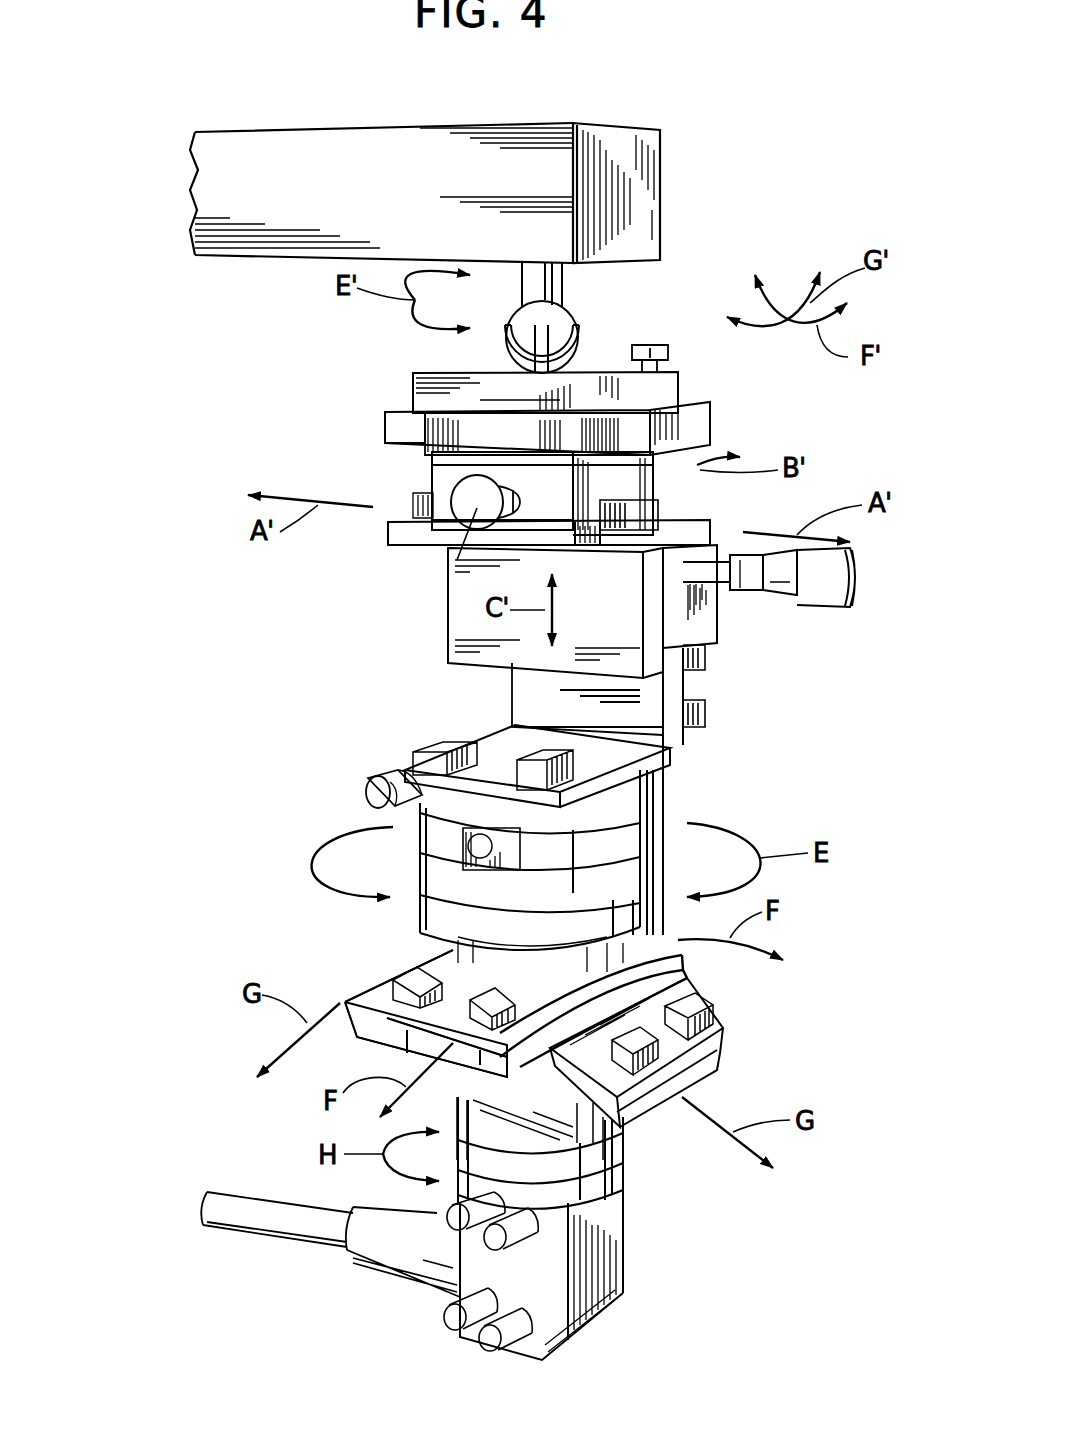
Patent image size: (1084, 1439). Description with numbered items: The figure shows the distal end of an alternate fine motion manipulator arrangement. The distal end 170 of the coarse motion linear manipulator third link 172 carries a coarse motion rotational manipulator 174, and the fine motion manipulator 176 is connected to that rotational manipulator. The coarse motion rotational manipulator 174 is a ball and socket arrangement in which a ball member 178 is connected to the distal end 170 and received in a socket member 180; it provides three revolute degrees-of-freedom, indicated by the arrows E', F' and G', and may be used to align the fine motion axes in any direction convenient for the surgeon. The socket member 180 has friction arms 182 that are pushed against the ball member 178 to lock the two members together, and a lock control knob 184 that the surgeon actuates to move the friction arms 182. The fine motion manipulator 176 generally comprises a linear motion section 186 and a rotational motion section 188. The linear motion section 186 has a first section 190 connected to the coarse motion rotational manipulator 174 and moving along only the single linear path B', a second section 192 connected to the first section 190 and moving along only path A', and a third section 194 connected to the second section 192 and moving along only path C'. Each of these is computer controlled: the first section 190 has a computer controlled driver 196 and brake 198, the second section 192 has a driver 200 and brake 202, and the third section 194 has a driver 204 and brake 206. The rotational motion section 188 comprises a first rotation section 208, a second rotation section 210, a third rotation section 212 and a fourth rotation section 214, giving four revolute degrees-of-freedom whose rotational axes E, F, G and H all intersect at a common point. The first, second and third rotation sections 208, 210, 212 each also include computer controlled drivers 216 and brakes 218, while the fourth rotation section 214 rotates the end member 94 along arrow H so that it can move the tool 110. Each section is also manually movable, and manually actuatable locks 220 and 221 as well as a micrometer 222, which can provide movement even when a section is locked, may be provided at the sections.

The end member 94 is at (593, 1325).
The tool 110 is at (287, 1230).
The distal end 170 is at (662, 160).
The coarse motion linear manipulator third link 172 is at (347, 191).
The coarse motion rotational manipulator 174 is at (280, 328).
The fine motion manipulator 176 is at (270, 910).
The ball member 178 is at (565, 312).
The socket member 180 is at (413, 382).
The friction arms 182 is at (510, 335).
The lock control knob 184 is at (668, 348).
The linear motion section 186 is at (320, 628).
The rotational motion section 188 is at (193, 1027).
The first section 190 is at (660, 450).
The second section 192 is at (660, 500).
The third section 194 is at (720, 618).
The computer controlled driver 196 is at (697, 405).
The computer controlled brake 198 is at (395, 445).
The computer controlled driver 200 is at (413, 508).
The computer controlled brake 202 is at (593, 547).
The computer controlled driver 204 is at (705, 657).
The computer controlled brake 206 is at (705, 712).
The first rotation section 208 is at (717, 820).
The second rotation section 210 is at (393, 1047).
The third rotation section 212 is at (720, 1058).
The fourth rotation section 214 is at (625, 1205).
The computer controlled drivers 216 is at (430, 745).
The brakes 218 is at (520, 742).
The lock 220 is at (457, 560).
The lock 221 is at (860, 580).
The micrometer 222 is at (367, 783).